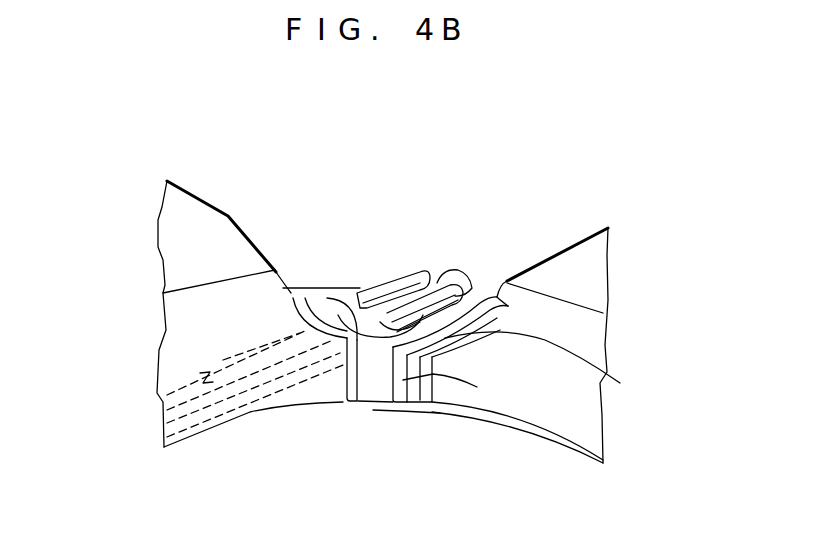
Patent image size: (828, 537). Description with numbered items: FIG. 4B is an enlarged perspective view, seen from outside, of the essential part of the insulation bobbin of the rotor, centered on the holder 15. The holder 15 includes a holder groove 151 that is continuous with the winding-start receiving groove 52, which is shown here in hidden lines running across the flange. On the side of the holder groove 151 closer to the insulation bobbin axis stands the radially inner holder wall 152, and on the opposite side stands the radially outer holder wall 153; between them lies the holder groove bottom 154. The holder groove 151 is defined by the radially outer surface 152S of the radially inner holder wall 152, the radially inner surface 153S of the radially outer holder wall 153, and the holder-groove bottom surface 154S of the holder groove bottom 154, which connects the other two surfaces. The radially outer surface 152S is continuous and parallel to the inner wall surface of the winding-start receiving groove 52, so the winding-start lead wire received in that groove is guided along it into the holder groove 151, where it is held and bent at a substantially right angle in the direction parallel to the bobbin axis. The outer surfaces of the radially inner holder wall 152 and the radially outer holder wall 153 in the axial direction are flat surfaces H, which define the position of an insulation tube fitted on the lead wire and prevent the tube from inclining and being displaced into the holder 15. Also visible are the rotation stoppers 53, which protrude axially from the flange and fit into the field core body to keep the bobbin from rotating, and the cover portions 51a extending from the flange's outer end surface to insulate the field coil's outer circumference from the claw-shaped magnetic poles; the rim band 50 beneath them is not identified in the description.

The holder 15 is at (377, 300).
The holder groove 151 is at (437, 280).
The radially inner holder wall 152 is at (460, 283).
The radially outer surface of the radially inner holder wall 152S is at (393, 410).
The radially outer holder wall 153 is at (377, 288).
The radially inner surface of the radially outer holder wall 153S is at (383, 275).
The holder groove bottom 154 is at (380, 302).
The holder-groove bottom surface 154S is at (397, 310).
The rim band 50 is at (519, 430).
The cover portion 51a is at (167, 223).
The winding-start receiving groove 52 is at (197, 368).
The rotation stopper 53 is at (477, 387).
The flat surface H is at (375, 290).